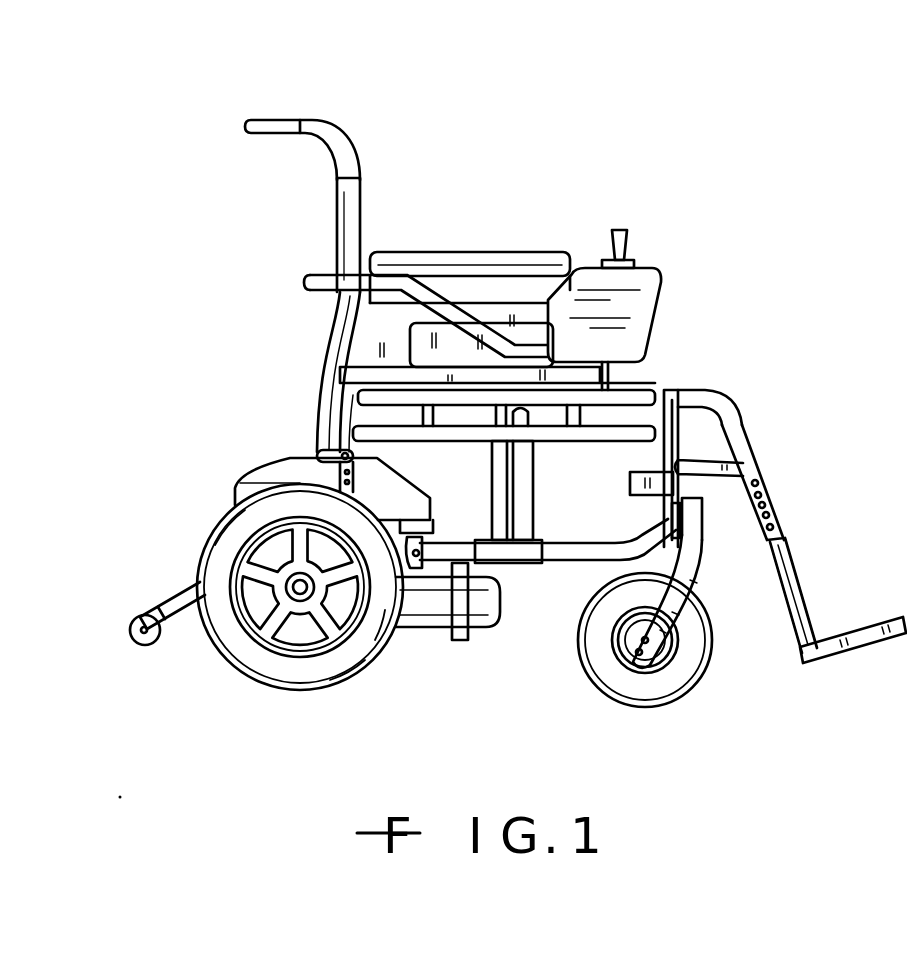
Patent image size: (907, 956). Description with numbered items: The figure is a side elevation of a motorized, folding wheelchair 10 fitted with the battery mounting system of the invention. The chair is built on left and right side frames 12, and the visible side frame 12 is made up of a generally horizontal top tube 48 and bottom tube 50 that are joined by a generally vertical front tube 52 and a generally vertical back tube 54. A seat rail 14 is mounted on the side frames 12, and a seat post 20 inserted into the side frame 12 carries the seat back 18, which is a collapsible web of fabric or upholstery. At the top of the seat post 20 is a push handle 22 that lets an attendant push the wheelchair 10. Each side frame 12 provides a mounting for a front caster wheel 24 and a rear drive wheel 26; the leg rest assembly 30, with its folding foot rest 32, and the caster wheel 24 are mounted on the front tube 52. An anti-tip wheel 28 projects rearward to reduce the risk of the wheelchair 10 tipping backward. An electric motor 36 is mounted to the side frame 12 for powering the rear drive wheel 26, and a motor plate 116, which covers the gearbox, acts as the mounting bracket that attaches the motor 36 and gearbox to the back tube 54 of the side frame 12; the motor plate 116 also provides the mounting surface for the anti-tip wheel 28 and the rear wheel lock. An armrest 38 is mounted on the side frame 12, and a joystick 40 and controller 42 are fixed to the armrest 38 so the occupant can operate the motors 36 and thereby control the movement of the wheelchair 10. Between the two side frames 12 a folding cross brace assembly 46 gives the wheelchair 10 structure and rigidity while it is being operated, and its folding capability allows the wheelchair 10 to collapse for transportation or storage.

The wheelchair 10 is at (640, 147).
The side frame 12 is at (563, 562).
The seat rail 14 is at (647, 390).
The seat back 18 is at (362, 206).
The seat post 20 is at (343, 143).
The push handle 22 is at (268, 118).
The front caster wheel 24 is at (610, 697).
The rear drive wheel 26 is at (215, 650).
The anti-tip wheel 28 is at (140, 614).
The leg rest assembly 30 is at (757, 458).
The foot rest 32 is at (863, 630).
The electric motor 36 is at (480, 633).
The armrest 38 is at (470, 252).
The joystick 40 is at (632, 242).
The controller 42 is at (663, 285).
The folding cross brace assembly 46 is at (533, 490).
The top tube 48 is at (457, 442).
The bottom tube 50 is at (563, 540).
The front tube 52 is at (697, 410).
The back tube 54 is at (317, 422).
The motor plate 116 is at (417, 633).